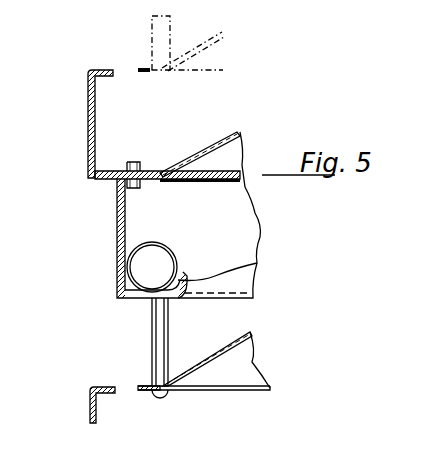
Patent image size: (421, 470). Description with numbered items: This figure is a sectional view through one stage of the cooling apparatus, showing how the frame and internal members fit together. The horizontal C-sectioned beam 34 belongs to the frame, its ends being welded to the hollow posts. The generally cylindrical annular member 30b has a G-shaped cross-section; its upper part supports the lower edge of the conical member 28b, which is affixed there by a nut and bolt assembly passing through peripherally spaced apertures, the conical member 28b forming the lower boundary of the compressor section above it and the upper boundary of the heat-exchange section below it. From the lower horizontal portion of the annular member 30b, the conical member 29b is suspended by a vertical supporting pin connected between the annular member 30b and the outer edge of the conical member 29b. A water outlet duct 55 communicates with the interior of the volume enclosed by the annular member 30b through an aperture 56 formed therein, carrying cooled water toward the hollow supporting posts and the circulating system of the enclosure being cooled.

The C-sectioned beam 34 is at (92, 92).
The conical member 28b is at (210, 145).
The conical member 29b is at (245, 352).
The annular member 30b is at (117, 207).
The water outlet duct 55 is at (165, 244).
The aperture 56 is at (160, 267).